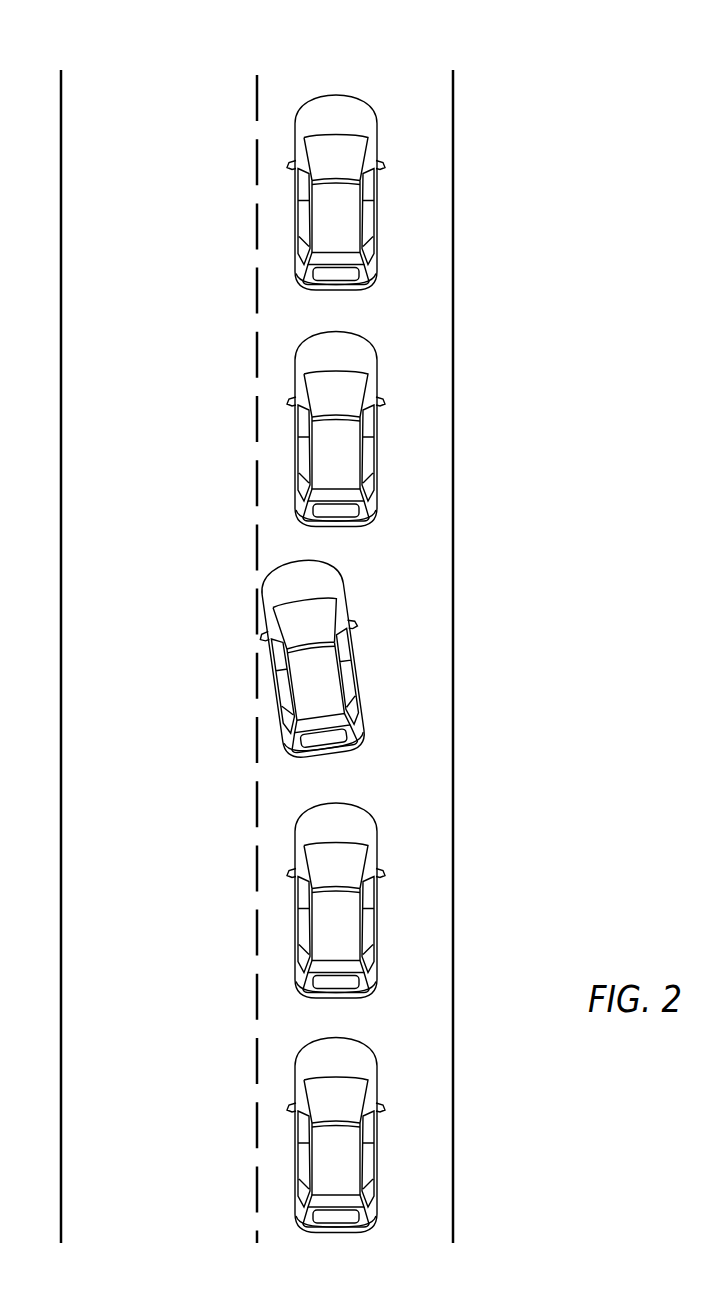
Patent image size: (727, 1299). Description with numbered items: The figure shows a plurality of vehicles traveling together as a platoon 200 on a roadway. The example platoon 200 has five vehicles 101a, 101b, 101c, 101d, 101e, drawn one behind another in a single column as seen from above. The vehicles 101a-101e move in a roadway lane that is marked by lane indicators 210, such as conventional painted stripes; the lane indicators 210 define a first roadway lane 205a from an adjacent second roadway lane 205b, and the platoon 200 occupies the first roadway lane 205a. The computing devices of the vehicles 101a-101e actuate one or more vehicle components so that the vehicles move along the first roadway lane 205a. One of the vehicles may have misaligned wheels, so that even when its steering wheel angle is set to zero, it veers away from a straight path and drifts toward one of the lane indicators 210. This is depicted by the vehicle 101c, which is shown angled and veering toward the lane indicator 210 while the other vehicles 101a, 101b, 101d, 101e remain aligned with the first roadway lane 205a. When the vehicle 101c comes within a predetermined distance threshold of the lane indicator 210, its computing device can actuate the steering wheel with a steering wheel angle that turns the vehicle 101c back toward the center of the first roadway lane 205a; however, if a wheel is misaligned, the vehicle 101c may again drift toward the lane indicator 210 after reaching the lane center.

The platoon 200 is at (618, 66).
The first roadway lane 205a is at (407, 102).
The second roadway lane 205b is at (138, 100).
The lane indicators 210 is at (255, 107).
The vehicle 101a is at (378, 133).
The vehicle 101b is at (378, 370).
The vehicle 101c is at (342, 593).
The vehicle 101d is at (378, 841).
The vehicle 101e is at (378, 1076).